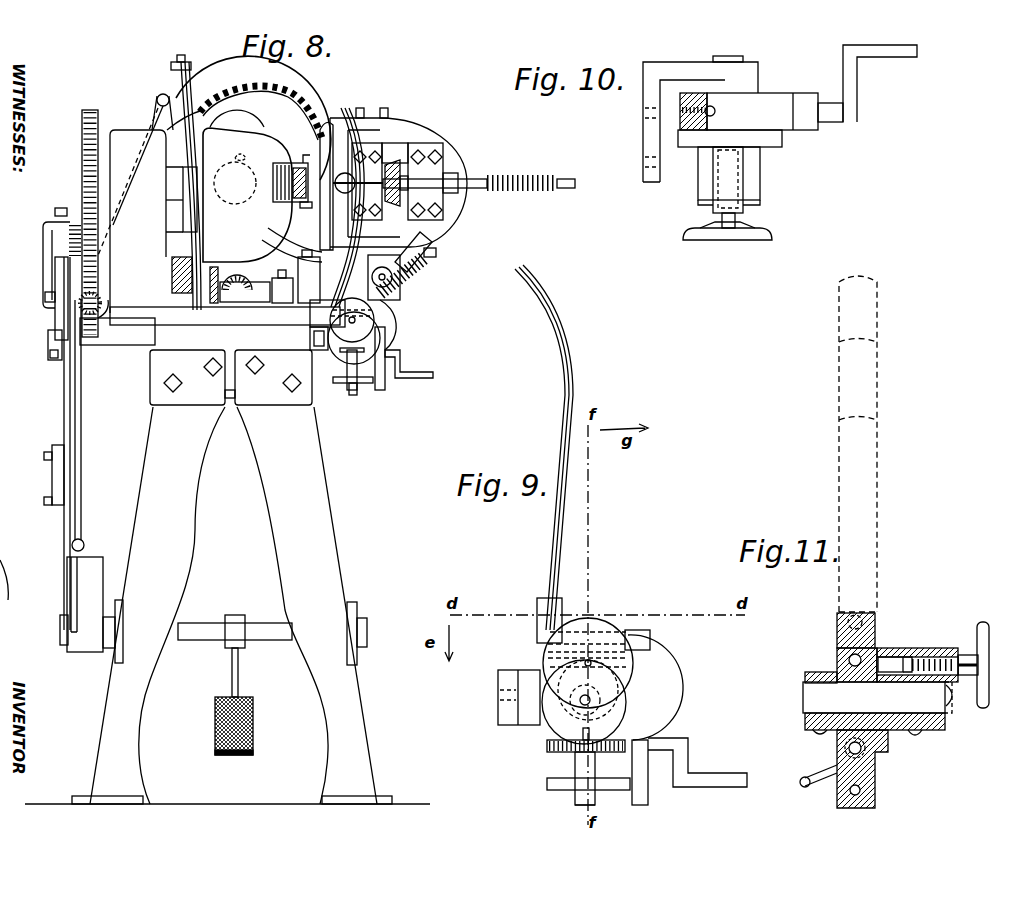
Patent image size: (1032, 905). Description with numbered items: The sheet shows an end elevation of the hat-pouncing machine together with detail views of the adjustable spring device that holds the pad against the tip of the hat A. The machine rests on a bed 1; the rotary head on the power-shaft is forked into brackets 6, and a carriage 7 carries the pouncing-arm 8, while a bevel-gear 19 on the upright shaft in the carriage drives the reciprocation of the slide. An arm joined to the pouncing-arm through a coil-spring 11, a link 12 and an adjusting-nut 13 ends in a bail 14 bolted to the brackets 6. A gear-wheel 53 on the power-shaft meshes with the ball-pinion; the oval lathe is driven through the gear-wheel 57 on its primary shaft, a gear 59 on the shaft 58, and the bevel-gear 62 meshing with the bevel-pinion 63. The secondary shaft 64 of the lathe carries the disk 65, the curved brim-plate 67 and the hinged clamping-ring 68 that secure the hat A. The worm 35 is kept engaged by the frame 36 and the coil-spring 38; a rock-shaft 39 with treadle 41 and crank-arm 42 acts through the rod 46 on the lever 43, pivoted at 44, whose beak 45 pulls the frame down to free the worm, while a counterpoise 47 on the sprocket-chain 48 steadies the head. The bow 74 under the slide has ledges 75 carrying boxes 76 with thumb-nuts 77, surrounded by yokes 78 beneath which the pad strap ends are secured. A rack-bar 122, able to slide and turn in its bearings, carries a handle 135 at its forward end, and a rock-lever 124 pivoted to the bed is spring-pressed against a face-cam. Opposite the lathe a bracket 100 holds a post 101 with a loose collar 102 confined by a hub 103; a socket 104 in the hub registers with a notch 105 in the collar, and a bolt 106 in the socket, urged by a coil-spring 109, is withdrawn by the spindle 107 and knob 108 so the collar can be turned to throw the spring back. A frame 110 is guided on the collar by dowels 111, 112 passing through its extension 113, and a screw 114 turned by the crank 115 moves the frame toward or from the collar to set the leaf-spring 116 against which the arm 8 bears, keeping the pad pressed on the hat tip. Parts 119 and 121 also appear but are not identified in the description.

In FIG. 8, the bed 1 is at (157, 348).
In FIG. 8, the brackets 6 is at (367, 143).
In FIG. 8, the carriage 7 is at (390, 143).
In FIG. 8, the pouncing-arm 8 is at (358, 183).
In FIG. 8, the coil-spring 11 is at (524, 178).
In FIG. 8, the link 12 is at (400, 168).
In FIG. 8, the adjusting-nut 13 is at (445, 175).
In FIG. 8, the bail 14 is at (400, 118).
In FIG. 8, the bevel-gear 19 is at (396, 165).
In FIG. 8, the worm 35 is at (172, 270).
In FIG. 8, the frame 36 is at (52, 222).
In FIG. 8, the coil-spring 38 is at (68, 236).
In FIG. 8, the rock-shaft 39 is at (205, 627).
In FIG. 8, the treadle 41 is at (215, 722).
In FIG. 8, the crank-arm 42 is at (64, 550).
In FIG. 8, the lever 43 is at (62, 381).
In FIG. 8, the pivot 44 is at (52, 296).
In FIG. 8, the beak 45 is at (58, 265).
In FIG. 8, the rod 46 is at (52, 480).
In FIG. 8, the counterpoise 47 is at (85, 604).
In FIG. 8, the sprocket-chain 48 is at (81, 482).
In FIG. 8, the gear-wheel 53 is at (285, 108).
In FIG. 8, the gear-wheel 57 is at (82, 148).
In FIG. 8, the shaft 58 is at (240, 285).
In FIG. 8, the gear 59 is at (68, 318).
In FIG. 8, the bevel-gear 62 is at (210, 307).
In FIG. 8, the bevel-pinion 63 is at (243, 307).
In FIG. 8, the secondary shaft 64 is at (176, 187).
In FIG. 8, the disk 65 is at (188, 215).
In FIG. 8, the metal plate 67 is at (158, 92).
In FIG. 8, the clamping-ring 68 is at (194, 85).
In FIG. 8, the bow 74 is at (326, 128).
In FIG. 8, the ledges 75 is at (282, 193).
In FIG. 8, the boxes 76 is at (313, 209).
In FIG. 8, the thumb-nuts 77 is at (294, 174).
In FIG. 8, the yokes 78 is at (303, 162).
In FIG. 8, the bracket 100 is at (340, 340).
In FIG. 9, the bracket 100 is at (498, 682).
In FIG. 10, the bracket 100 is at (643, 137).
In FIG. 11, the bracket 100 is at (805, 674).
In FIG. 9, the post 101 is at (568, 722).
In FIG. 10, the post 101 is at (740, 57).
In FIG. 11, the post 101 is at (877, 697).
In FIG. 8, the collar 102 is at (311, 330).
In FIG. 9, the collar 102 is at (632, 690).
In FIG. 10, the collar 102 is at (782, 143).
In FIG. 11, the collar 102 is at (838, 650).
In FIG. 8, the hub 103 is at (350, 350).
In FIG. 9, the hub 103 is at (560, 717).
In FIG. 10, the hub 103 is at (760, 186).
In FIG. 11, the hub 103 is at (940, 730).
In FIG. 11, the socket 104 is at (945, 655).
In FIG. 11, the notch 105 is at (900, 650).
In FIG. 11, the bolt 106 is at (905, 660).
In FIG. 10, the spindle 107 is at (735, 220).
In FIG. 11, the spindle 107 is at (960, 660).
In FIG. 8, the knob 108 is at (375, 325).
In FIG. 9, the knob 108 is at (620, 640).
In FIG. 10, the knob 108 is at (772, 236).
In FIG. 11, the knob 108 is at (989, 658).
In FIG. 11, the coil-spring 109 is at (961, 701).
In FIG. 8, the frame 110 is at (388, 343).
In FIG. 9, the frame 110 is at (676, 699).
In FIG. 10, the frame 110 is at (774, 111).
In FIG. 11, the dowel 111 is at (870, 632).
In FIG. 8, the dowel 112 is at (333, 380).
In FIG. 9, the dowel 112 is at (547, 786).
In FIG. 11, the dowel 112 is at (862, 790).
In FIG. 8, the extension 113 is at (352, 392).
In FIG. 9, the extension 113 is at (575, 803).
In FIG. 11, the extension 113 is at (876, 772).
In FIG. 8, the screw 114 is at (341, 362).
In FIG. 9, the screw 114 is at (565, 752).
In FIG. 11, the screw 114 is at (845, 750).
In FIG. 8, the crank 115 is at (433, 375).
In FIG. 9, the crank 115 is at (722, 773).
In FIG. 10, the crank 115 is at (900, 57).
In FIG. 11, the crank 115 is at (802, 780).
In FIG. 8, the leaf-spring 116 is at (344, 106).
In FIG. 9, the leaf-spring 116 is at (553, 421).
In FIG. 10, the leaf-spring 116 is at (697, 95).
In FIG. 8, the stop 119 is at (436, 256).
In FIG. 8, the spring 121 is at (418, 290).
In FIG. 8, the rack-bar 122 is at (405, 270).
In FIG. 8, the rock-lever 124 is at (252, 276).
In FIG. 8, the handle 135 is at (428, 252).
In FIG. 8, the hat A is at (253, 159).